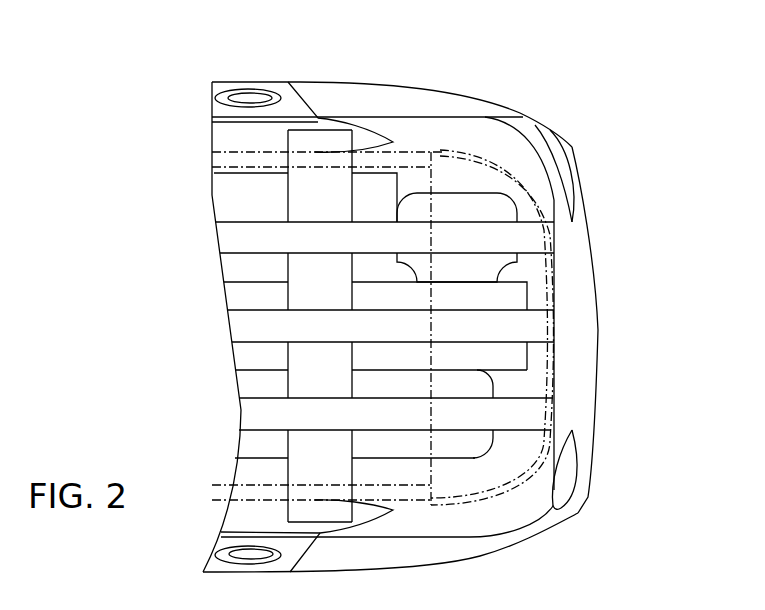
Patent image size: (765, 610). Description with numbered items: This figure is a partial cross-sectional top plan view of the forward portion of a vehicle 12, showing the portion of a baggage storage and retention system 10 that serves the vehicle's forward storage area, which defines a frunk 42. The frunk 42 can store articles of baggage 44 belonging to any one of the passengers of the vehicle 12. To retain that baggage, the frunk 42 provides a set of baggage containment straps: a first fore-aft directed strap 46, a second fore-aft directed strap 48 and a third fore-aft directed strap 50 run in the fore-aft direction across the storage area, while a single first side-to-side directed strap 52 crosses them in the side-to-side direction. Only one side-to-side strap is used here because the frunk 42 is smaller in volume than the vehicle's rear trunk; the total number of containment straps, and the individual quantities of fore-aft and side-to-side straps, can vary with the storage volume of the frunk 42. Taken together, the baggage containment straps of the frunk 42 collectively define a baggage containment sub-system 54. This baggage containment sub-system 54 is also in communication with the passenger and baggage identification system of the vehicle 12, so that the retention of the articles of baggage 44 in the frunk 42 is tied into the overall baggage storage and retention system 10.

The baggage storage and retention system 10 is at (575, 93).
The vehicle 12 is at (368, 95).
The frunk 42 is at (525, 200).
The articles of baggage 44 is at (468, 443).
The first fore-aft directed strap 46 is at (225, 240).
The second fore-aft directed strap 48 is at (243, 325).
The third fore-aft directed strap 50 is at (243, 413).
The first side-to-side directed strap 52 is at (302, 191).
The baggage containment sub-system 54 is at (565, 238).